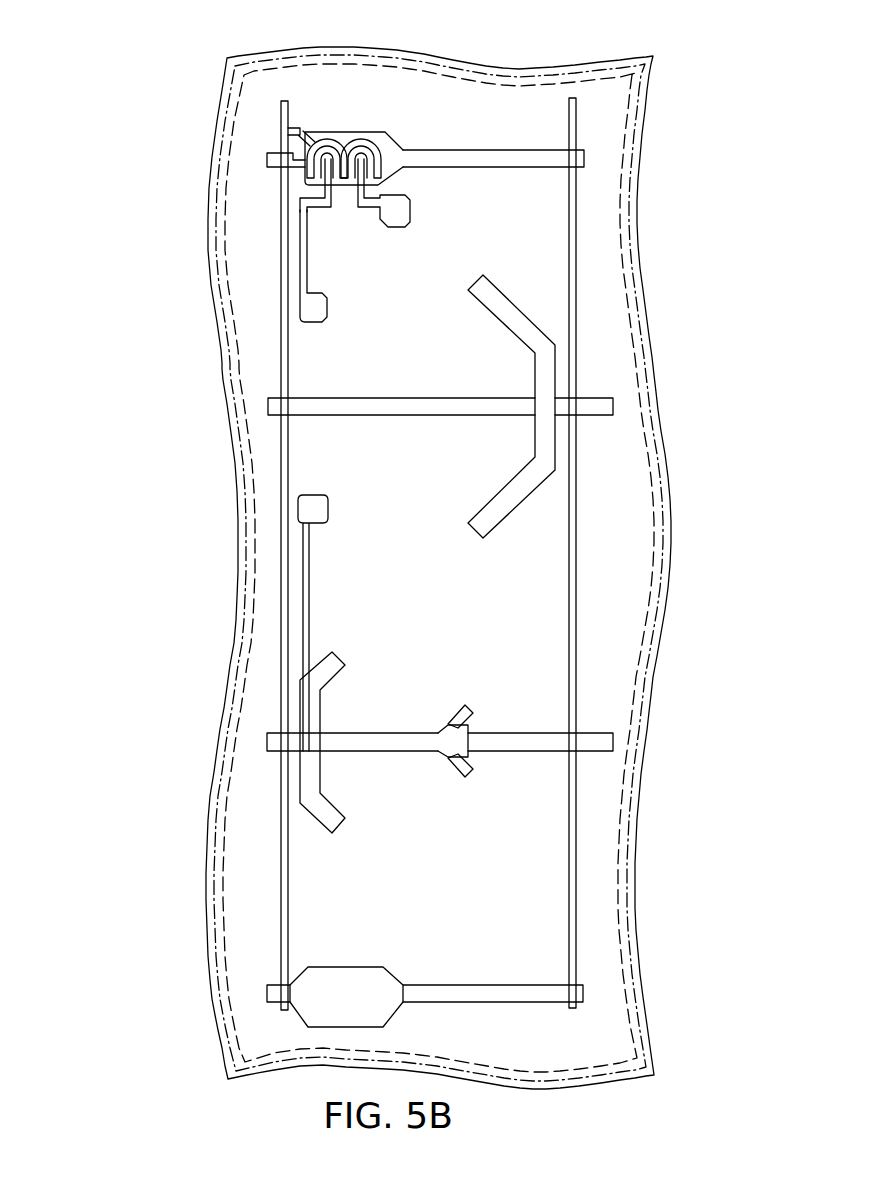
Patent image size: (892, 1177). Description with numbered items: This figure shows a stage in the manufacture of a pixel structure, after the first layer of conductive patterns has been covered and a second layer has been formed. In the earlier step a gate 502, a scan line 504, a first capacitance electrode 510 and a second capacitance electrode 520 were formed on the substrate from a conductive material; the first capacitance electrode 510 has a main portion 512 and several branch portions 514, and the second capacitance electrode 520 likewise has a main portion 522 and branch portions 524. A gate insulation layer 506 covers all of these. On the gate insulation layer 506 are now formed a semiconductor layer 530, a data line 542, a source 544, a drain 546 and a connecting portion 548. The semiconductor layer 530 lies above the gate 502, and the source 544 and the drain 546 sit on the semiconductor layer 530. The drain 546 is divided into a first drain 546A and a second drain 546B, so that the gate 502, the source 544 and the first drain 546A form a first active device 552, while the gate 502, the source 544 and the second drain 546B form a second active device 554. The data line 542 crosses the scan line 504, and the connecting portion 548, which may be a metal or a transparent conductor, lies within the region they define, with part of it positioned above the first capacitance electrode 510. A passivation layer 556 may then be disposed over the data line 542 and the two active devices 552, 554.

The gate 502 is at (400, 140).
The scan line 504 is at (537, 155).
The gate insulation layer 506 is at (245, 467).
The first capacitance electrode 510 is at (525, 718).
The main portion 512 is at (612, 740).
The branch portions 514 is at (470, 714).
The second capacitance electrode 520 is at (525, 406).
The main portion 522 is at (494, 391).
The branch portions 524 is at (532, 325).
The semiconductor layer 530 is at (313, 157).
The data line 542 is at (283, 629).
The source 544 is at (313, 173).
The drain 546 is at (185, 240).
The first drain 546A is at (303, 250).
The second drain 546B is at (326, 192).
The connecting portion 548 is at (306, 660).
The first active device 552 is at (328, 137).
The second active device 554 is at (367, 137).
The passivation layer 556 is at (262, 533).